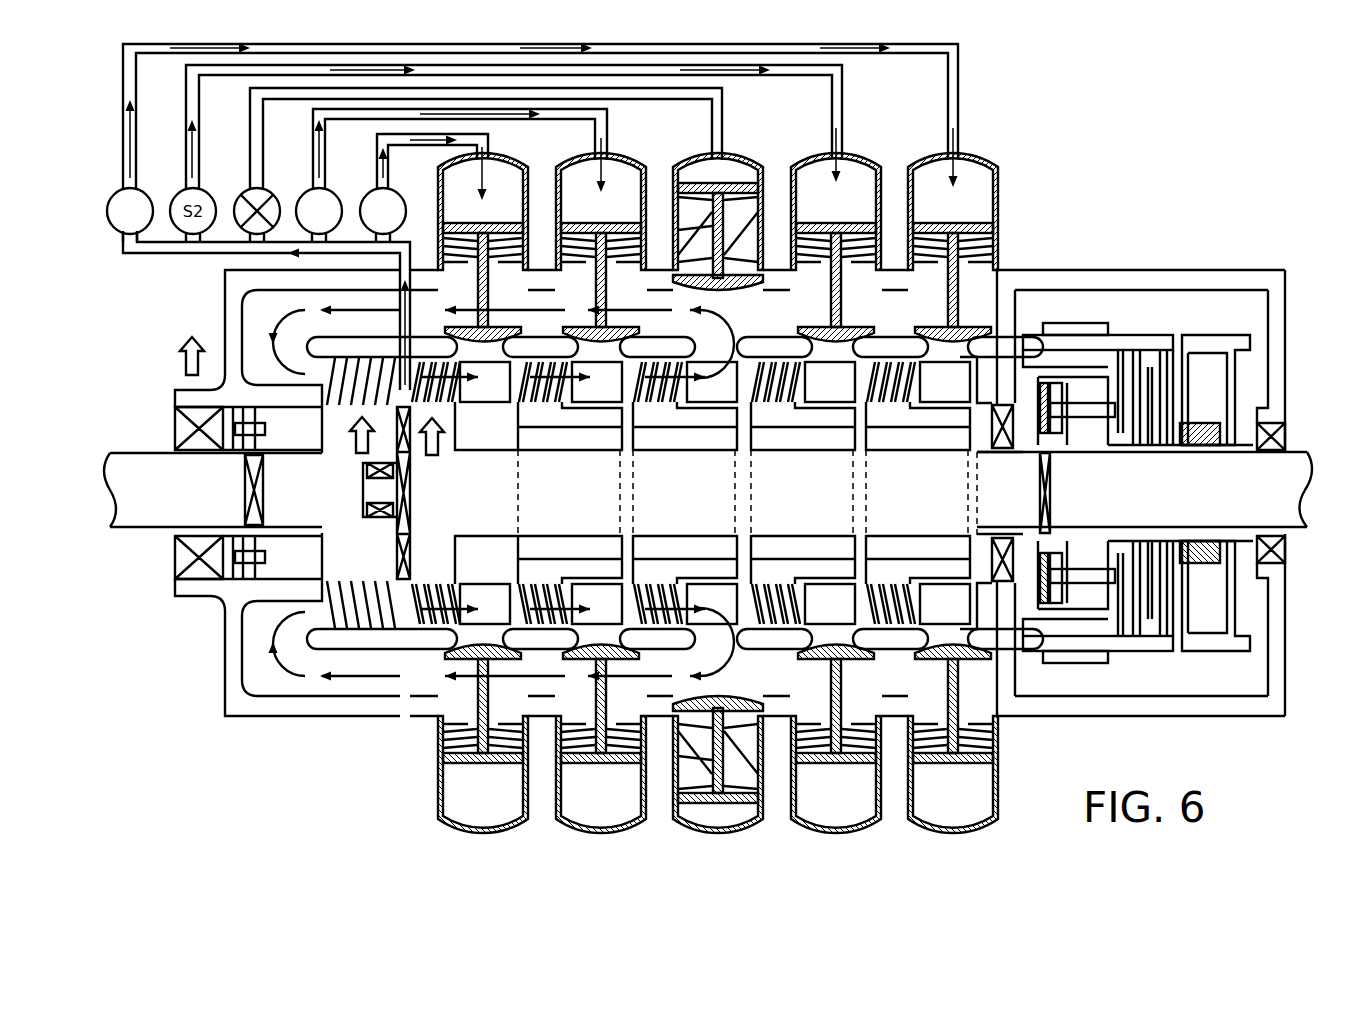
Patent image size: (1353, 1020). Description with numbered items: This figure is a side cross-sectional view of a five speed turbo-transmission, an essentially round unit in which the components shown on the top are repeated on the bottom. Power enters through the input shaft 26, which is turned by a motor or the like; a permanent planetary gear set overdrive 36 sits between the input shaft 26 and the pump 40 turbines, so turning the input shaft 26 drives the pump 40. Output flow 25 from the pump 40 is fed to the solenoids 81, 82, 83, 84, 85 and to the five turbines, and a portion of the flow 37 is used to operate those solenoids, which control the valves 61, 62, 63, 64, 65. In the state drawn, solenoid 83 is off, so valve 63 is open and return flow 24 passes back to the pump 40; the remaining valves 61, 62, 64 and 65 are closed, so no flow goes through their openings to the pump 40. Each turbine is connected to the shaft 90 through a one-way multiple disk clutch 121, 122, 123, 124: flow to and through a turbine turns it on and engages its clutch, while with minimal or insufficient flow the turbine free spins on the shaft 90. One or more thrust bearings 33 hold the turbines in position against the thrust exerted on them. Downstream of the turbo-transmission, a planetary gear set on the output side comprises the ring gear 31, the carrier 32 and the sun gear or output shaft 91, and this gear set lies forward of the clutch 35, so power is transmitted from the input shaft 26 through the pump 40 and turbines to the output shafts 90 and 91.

The return flow 24 is at (730, 332).
The output flow 25 is at (405, 392).
The input shaft 26 is at (160, 535).
The ring gear 31 is at (1072, 658).
The carrier 32 is at (1153, 652).
The thrust bearing 33 is at (1052, 482).
The clutch 35 is at (1206, 352).
The permanent planetary gear set overdrive 36 is at (265, 565).
The flow 37 is at (296, 255).
The pump 40 is at (330, 620).
The valve 61 is at (508, 165).
The valve 62 is at (625, 165).
The valve 63 is at (732, 162).
The valve 64 is at (848, 165).
The valve 65 is at (965, 165).
The solenoid 81 is at (140, 190).
The solenoid 82 is at (178, 238).
The solenoid 83 is at (270, 197).
The solenoid 84 is at (329, 195).
The solenoid 85 is at (396, 195).
The output shaft 90 is at (460, 528).
The sun gear or output shaft 91 is at (1288, 456).
The one-way multiple disk clutch 121 is at (543, 452).
The one-way multiple disk clutch 122 is at (658, 452).
The one-way multiple disk clutch 123 is at (773, 452).
The one-way multiple disk clutch 124 is at (888, 452).